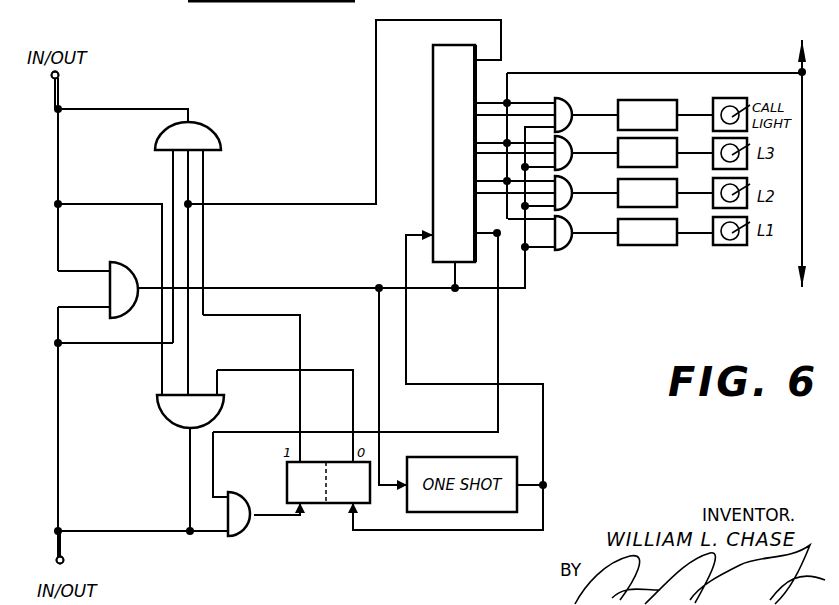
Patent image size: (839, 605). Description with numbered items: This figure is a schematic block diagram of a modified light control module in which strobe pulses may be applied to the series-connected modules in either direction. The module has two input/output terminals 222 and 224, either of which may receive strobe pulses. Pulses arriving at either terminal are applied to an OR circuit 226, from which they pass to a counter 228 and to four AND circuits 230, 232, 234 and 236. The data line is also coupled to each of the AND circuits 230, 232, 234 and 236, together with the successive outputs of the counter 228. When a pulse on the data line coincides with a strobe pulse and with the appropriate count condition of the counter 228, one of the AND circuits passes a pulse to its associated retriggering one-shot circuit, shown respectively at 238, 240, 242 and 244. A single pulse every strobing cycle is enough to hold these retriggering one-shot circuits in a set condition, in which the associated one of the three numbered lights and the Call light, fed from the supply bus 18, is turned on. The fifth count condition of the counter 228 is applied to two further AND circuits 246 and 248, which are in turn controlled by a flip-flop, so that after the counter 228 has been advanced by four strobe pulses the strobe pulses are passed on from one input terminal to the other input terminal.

The power supply bus 18 is at (802, 72).
The terminal 222 is at (59, 76).
The terminal 224 is at (64, 559).
The OR circuit 226 is at (110, 289).
The counter 228 is at (433, 173).
The AND circuit 230 is at (565, 249).
The AND circuit 232 is at (577, 212).
The AND circuit 234 is at (572, 138).
The AND circuit 236 is at (558, 98).
The retriggering one-shot circuit 238 is at (665, 246).
The retriggering one-shot circuit 240 is at (678, 204).
The retriggering one-shot circuit 242 is at (680, 140).
The retriggering one-shot circuit 244 is at (652, 100).
The AND circuit 246 is at (168, 420).
The AND circuit 248 is at (218, 132).